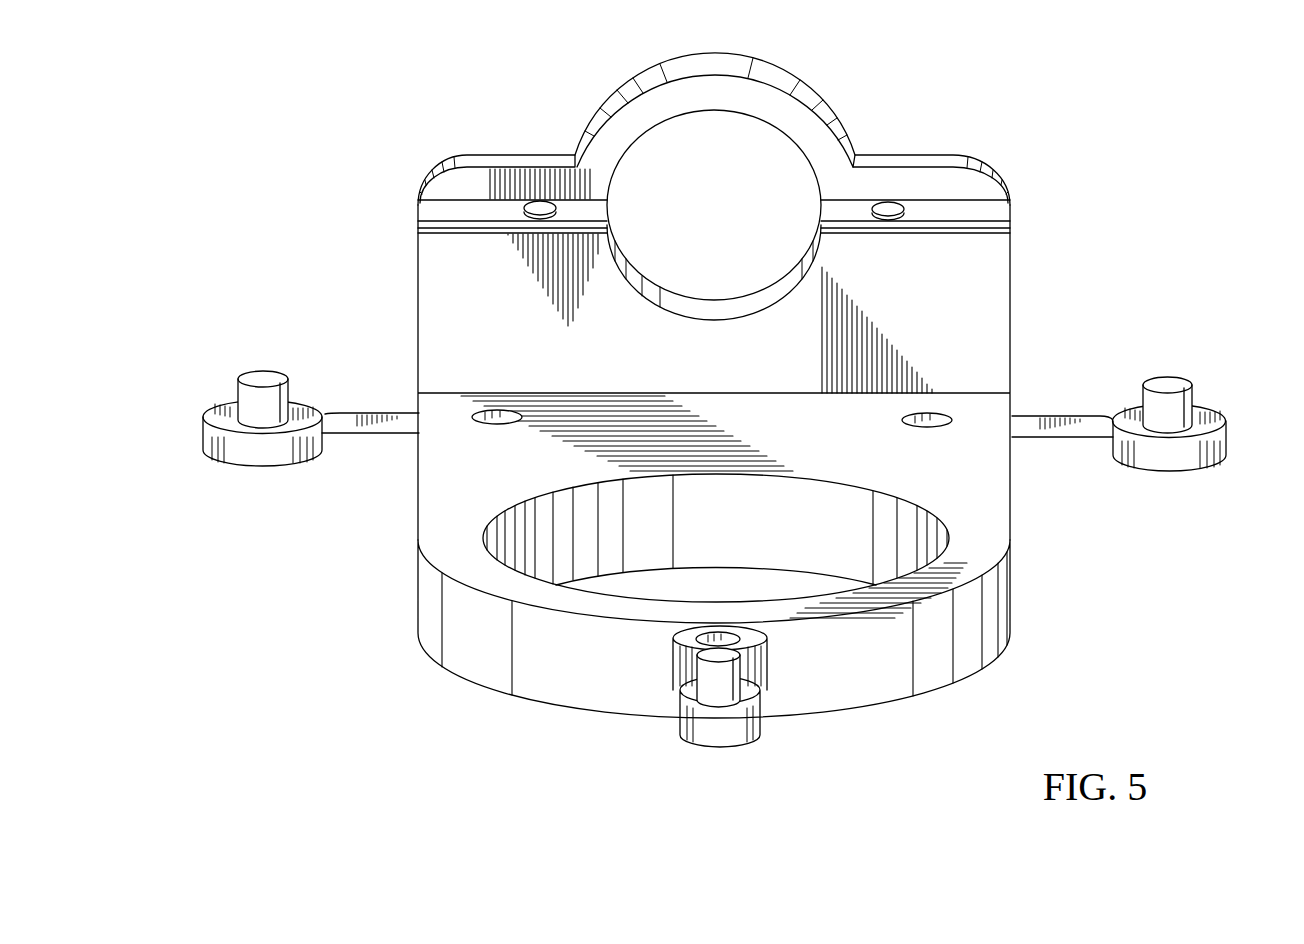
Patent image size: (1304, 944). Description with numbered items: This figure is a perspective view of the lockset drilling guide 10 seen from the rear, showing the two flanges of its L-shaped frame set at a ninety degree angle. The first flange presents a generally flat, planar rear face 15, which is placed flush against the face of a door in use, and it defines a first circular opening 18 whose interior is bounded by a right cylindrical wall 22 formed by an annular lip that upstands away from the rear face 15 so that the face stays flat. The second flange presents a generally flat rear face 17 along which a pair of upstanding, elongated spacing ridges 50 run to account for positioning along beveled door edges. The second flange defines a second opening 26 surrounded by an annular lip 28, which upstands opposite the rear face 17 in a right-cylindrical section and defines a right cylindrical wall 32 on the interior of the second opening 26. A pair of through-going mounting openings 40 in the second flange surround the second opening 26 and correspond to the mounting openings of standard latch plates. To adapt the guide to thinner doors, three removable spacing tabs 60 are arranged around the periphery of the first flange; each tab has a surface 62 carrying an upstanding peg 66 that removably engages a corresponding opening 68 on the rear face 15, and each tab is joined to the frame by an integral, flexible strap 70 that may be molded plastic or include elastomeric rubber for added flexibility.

The drilling guide 10 is at (988, 114).
The rear face 15 is at (984, 540).
The rear face 17 is at (984, 286).
The first circular opening 18 is at (725, 599).
The right cylindrical wall 22 is at (838, 504).
The second opening 26 is at (756, 196).
The annular lip 28 is at (780, 79).
The right cylindrical wall 32 is at (727, 307).
The mounting openings 40 is at (546, 210).
The spacing ridges 50 is at (443, 213).
The spacing tabs 60 is at (250, 474).
The surface 62 is at (305, 405).
The upstanding peg 66 is at (268, 383).
The opening 68 is at (506, 428).
The flexible strap 70 is at (350, 426).